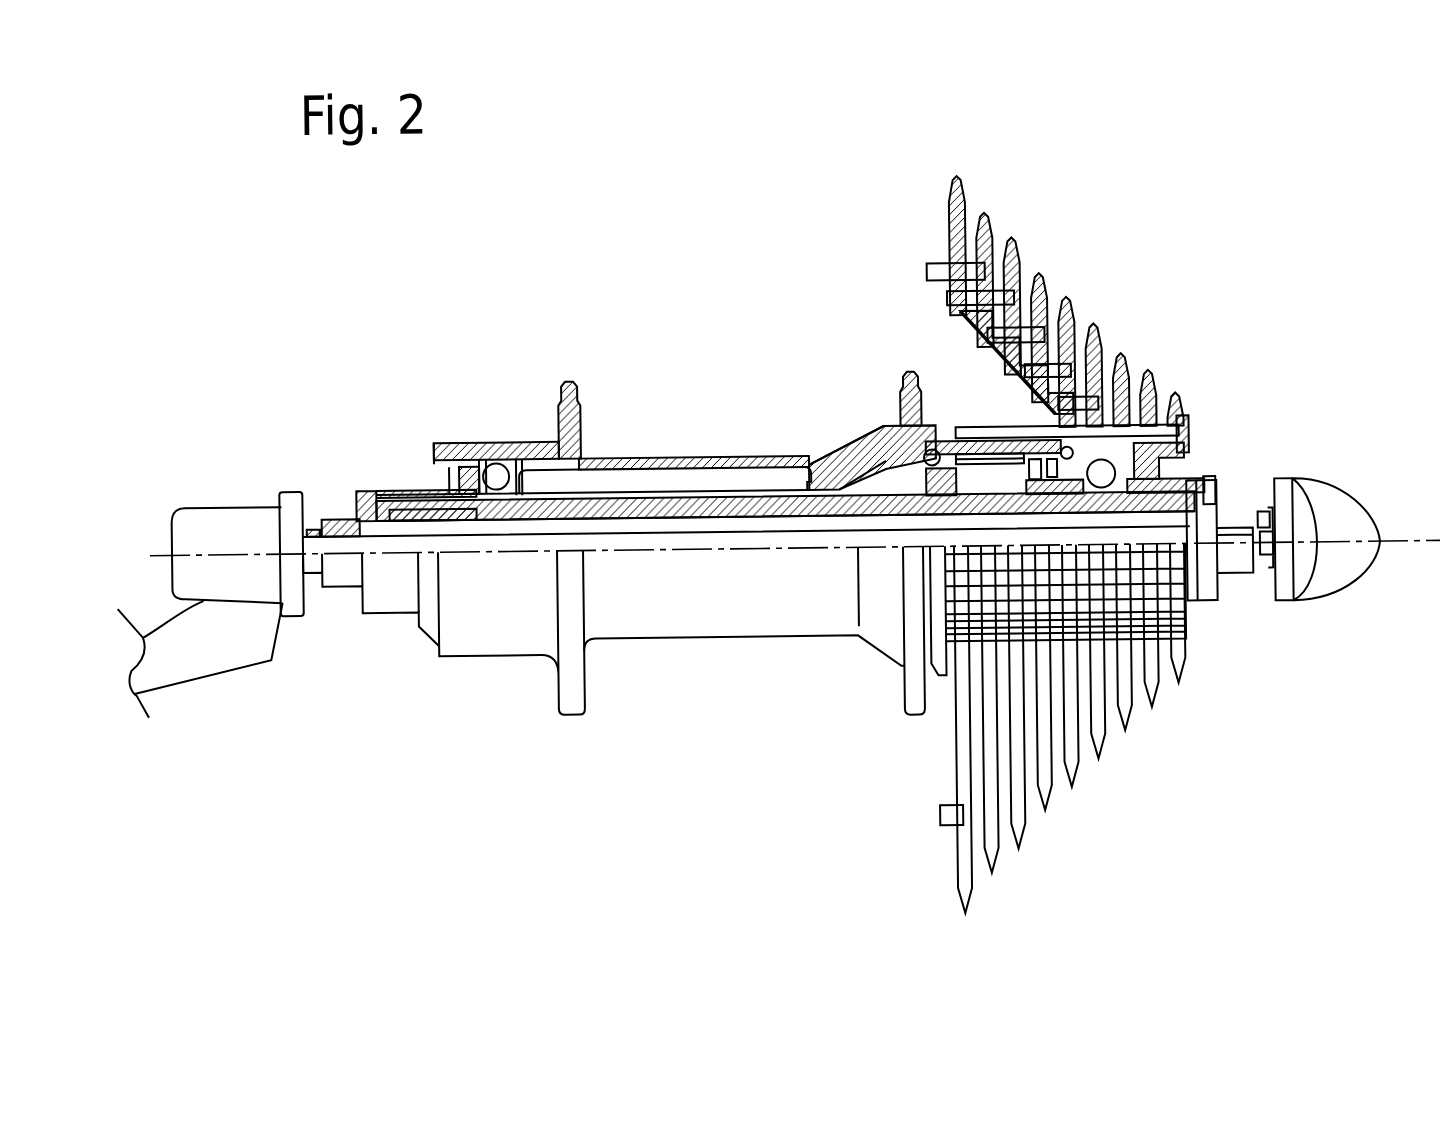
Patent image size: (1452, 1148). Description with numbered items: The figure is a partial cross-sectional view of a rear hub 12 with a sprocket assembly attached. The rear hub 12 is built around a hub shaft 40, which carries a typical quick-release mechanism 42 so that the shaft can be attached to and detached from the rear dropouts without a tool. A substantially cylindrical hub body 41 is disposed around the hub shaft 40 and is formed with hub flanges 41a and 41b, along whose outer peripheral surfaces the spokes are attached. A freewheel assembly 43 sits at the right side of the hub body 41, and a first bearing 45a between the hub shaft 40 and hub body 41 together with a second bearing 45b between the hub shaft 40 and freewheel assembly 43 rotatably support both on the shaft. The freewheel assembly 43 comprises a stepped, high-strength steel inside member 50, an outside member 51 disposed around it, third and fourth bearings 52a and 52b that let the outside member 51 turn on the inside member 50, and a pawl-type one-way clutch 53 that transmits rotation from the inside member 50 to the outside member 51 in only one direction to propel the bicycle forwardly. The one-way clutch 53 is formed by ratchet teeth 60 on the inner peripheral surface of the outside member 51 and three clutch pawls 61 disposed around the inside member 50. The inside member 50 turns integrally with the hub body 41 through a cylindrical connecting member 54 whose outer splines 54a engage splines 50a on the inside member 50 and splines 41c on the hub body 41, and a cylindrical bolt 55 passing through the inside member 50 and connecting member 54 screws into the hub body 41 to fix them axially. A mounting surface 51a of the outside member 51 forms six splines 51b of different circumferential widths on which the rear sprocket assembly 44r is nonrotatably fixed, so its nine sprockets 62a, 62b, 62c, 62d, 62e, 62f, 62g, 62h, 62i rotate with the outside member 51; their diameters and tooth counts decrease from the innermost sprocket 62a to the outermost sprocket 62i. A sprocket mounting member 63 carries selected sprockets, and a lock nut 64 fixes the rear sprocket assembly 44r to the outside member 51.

The rear hub 12 is at (691, 398).
The hub shaft 40 is at (611, 488).
The hub body 41 is at (734, 437).
The hub flange 41a is at (568, 380).
The hub flange 41b is at (912, 373).
The splines 41c is at (853, 463).
The quick-release mechanism 42 is at (272, 490).
The freewheel assembly 43 is at (1093, 435).
The rear sprocket assembly 44r is at (1082, 292).
The first bearing 45a is at (495, 462).
The second bearing 45b is at (1110, 475).
The inside member 50 is at (1184, 432).
The splines 50a is at (915, 498).
The outside member 51 is at (1010, 445).
The sprocket mounting surface 51a is at (1077, 420).
The splines 51b is at (967, 650).
The third bearing 52a is at (940, 435).
The fourth bearing 52b is at (1158, 440).
The one-way clutch 53 is at (990, 455).
The connecting member 54 is at (878, 498).
The splines 54a is at (948, 450).
The cylindrical bolt 55 is at (993, 450).
The ratchet teeth 60 is at (975, 470).
The clutch pawls 61 is at (950, 490).
The sprocket 62a is at (972, 880).
The sprocket 62b is at (996, 865).
The sprocket 62c is at (1024, 840).
The sprocket 62d is at (1052, 812).
The sprocket 62e is at (1080, 797).
The sprocket 62f is at (1105, 774).
The sprocket 62g is at (1131, 752).
The sprocket 62h is at (1158, 716).
The sprocket 62i is at (1185, 694).
The sprocket mounting member 63 is at (1002, 335).
The lock nut 64 is at (1207, 462).